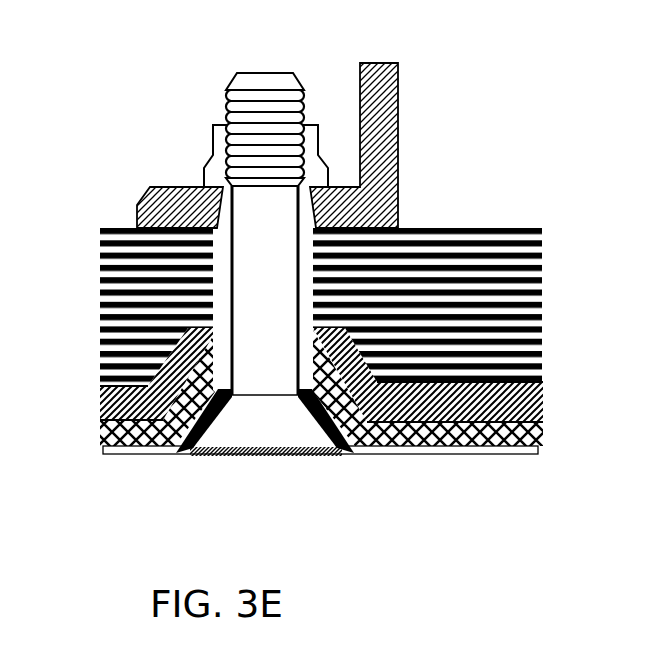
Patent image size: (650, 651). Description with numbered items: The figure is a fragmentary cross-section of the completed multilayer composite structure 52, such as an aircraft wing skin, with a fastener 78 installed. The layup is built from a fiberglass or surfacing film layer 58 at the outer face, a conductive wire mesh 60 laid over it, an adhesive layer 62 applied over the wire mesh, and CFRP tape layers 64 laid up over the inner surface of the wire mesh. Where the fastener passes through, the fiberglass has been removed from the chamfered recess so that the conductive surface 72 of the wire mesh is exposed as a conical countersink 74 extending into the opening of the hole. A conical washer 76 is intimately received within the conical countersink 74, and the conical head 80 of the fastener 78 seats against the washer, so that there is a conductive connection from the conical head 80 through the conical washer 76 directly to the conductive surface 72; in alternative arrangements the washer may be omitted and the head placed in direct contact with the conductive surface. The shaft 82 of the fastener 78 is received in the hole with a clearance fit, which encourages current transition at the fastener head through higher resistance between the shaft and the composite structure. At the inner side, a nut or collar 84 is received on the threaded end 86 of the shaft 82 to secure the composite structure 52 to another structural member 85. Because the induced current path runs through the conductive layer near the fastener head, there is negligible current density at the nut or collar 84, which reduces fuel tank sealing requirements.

The multilayer composite structure 52 is at (450, 212).
The fiberglass or surfacing film layer 58 is at (472, 450).
The wire mesh 60 is at (523, 438).
The adhesive layer 62 is at (527, 400).
The CFRP tape layers 64 is at (537, 262).
The conductive surface 72 is at (190, 422).
The conical countersinks 74 is at (197, 457).
The conical washers 76 is at (340, 443).
The fasteners 78 is at (252, 462).
The conical heads 80 is at (275, 428).
The shafts 82 is at (258, 260).
The nuts/collar 84 is at (210, 144).
The structural member 85 is at (383, 120).
The threaded ends 86 is at (268, 116).